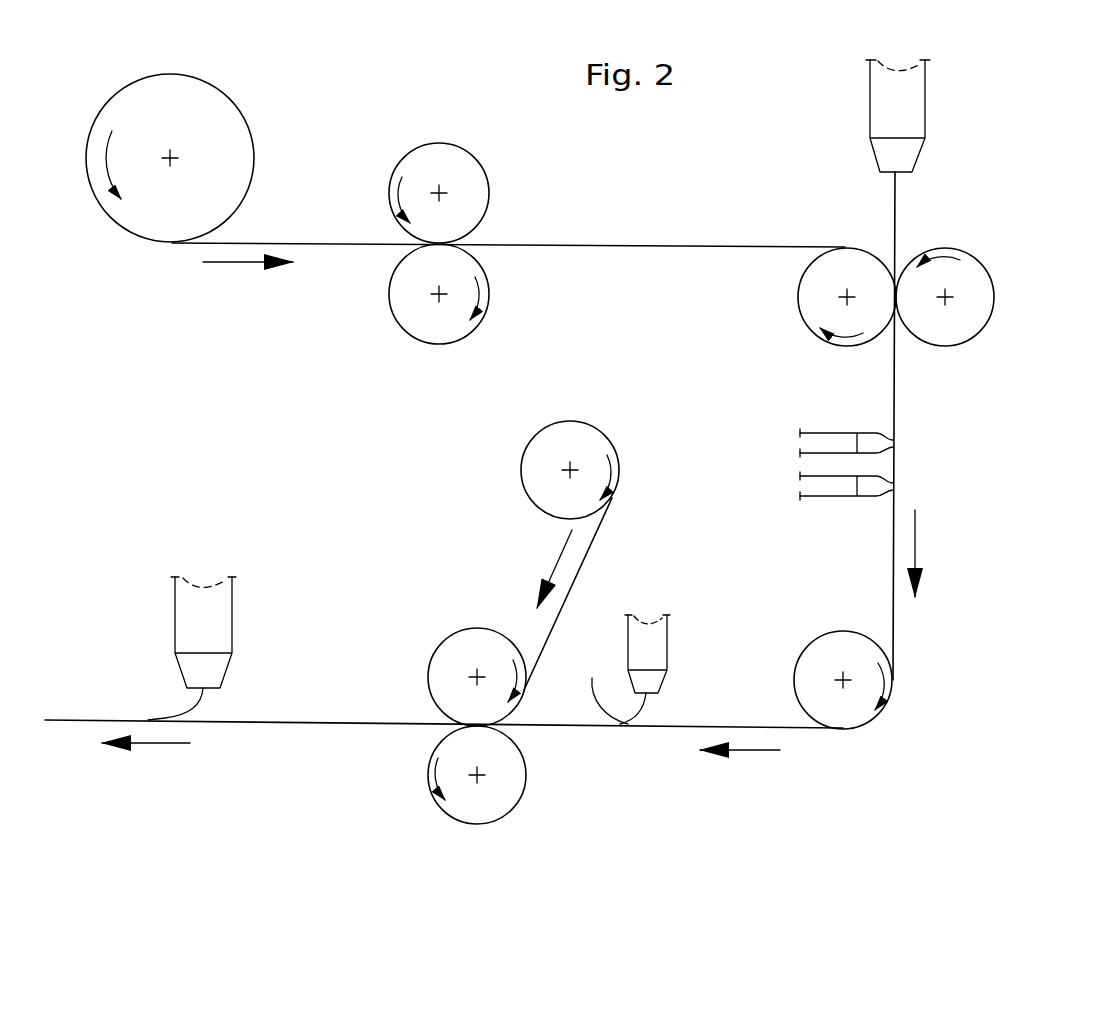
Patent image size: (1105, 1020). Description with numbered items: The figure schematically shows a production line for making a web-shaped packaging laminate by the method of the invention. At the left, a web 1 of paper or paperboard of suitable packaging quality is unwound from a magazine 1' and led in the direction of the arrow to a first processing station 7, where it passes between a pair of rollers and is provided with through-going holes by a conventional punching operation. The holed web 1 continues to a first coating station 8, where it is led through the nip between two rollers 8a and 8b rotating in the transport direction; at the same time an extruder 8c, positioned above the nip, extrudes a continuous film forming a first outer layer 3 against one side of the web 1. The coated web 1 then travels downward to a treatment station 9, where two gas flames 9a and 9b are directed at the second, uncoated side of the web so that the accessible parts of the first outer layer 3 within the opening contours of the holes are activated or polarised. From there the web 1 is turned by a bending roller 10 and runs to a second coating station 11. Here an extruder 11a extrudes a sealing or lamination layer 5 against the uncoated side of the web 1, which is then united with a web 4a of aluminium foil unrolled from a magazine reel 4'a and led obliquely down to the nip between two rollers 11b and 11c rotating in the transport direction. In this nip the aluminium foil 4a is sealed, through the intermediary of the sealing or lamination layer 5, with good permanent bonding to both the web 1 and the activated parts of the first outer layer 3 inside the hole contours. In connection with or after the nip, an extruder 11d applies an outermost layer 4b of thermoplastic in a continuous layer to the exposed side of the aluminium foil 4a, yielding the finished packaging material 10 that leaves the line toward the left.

The magazine 1' is at (148, 140).
The web 1 is at (508, 286).
The first processing station 7 is at (458, 105).
The first coating station 8 is at (989, 132).
The roller 8a is at (995, 305).
The roller 8b is at (797, 302).
The extruder 8c is at (868, 102).
The first outer layer 3 is at (902, 217).
The treatment station 9 is at (729, 470).
The gas flame 9a is at (822, 433).
The gas flame 9b is at (822, 497).
The bending roller 10 is at (813, 638).
The magazine reel 4'a is at (573, 434).
The web of aluminium foil 4a is at (585, 562).
The second coating station 11 is at (456, 518).
The extruder 11a is at (668, 650).
The roller 11b is at (470, 823).
The roller 11c is at (455, 632).
The extruder 11d is at (233, 605).
The sealing or lamination layer 5 is at (605, 685).
The outermost layer 4b is at (193, 710).